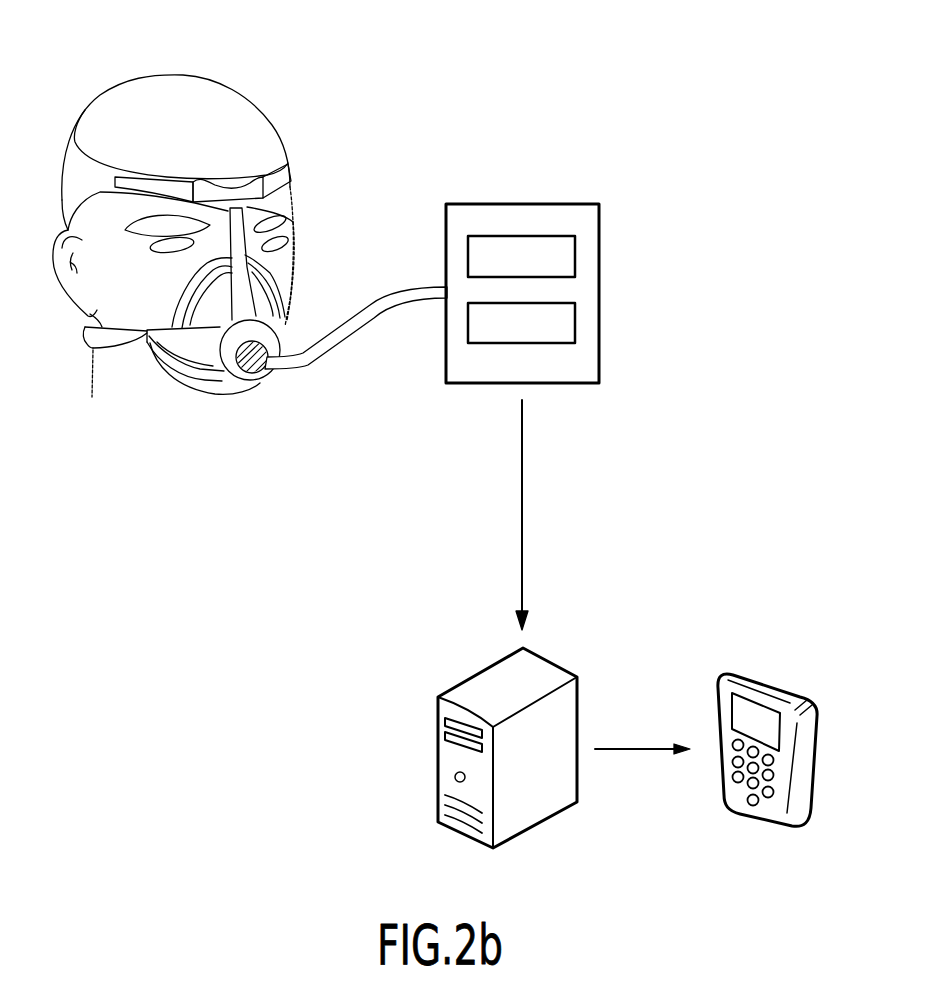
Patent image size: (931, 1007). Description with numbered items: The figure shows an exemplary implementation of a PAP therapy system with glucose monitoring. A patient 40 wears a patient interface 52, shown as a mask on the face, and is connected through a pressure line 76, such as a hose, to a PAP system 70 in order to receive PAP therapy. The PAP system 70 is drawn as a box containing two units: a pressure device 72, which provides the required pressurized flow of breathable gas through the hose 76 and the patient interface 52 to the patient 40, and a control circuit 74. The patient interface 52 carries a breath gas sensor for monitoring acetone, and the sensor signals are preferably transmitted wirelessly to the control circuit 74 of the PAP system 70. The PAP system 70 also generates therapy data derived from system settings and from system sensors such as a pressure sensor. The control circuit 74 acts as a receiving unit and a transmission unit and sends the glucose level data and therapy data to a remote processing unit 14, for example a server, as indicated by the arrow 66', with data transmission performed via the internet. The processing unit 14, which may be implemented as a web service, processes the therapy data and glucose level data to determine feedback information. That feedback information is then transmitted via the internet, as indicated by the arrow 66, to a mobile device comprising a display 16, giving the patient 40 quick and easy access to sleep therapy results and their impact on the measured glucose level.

The patient 40 is at (188, 72).
The patient interface 52 is at (232, 368).
The pressure line 76 is at (378, 300).
The PAP system 70 is at (520, 204).
The pressure device 72 is at (575, 254).
The control circuit 74 is at (575, 320).
The arrow 66' is at (560, 515).
The processing unit 14 is at (522, 820).
The arrow 66 is at (642, 787).
The display 16 is at (762, 716).